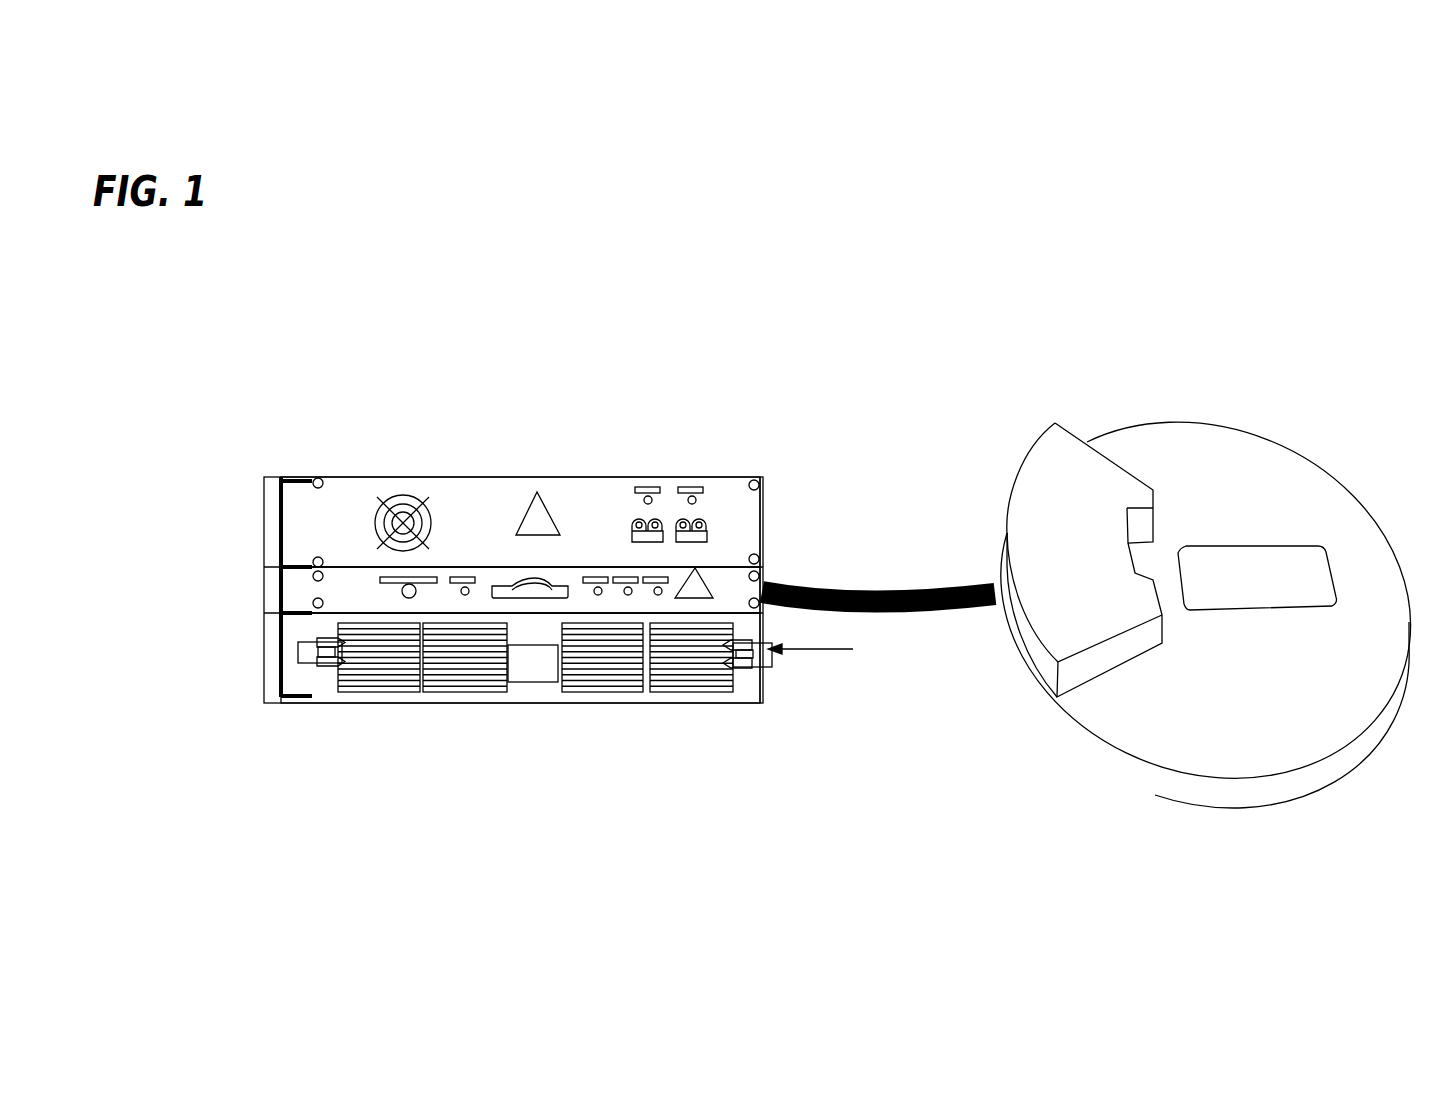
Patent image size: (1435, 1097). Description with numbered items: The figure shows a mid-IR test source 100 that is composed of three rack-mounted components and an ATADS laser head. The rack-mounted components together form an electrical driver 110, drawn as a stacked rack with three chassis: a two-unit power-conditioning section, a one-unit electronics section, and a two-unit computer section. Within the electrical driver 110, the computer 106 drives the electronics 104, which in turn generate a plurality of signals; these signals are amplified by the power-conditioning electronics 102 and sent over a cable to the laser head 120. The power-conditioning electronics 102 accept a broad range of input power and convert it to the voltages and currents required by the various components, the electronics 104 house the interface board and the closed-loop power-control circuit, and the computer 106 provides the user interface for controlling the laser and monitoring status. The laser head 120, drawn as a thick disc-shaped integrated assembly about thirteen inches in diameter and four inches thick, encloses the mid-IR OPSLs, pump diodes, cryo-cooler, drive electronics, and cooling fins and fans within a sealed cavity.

The mid-IR test source 100 is at (1212, 319).
The power-conditioning electronics 102 is at (570, 478).
The electronics 104 is at (700, 580).
The computer 106 is at (737, 703).
The electrical driver 110 is at (330, 477).
The laser head 120 is at (1228, 425).